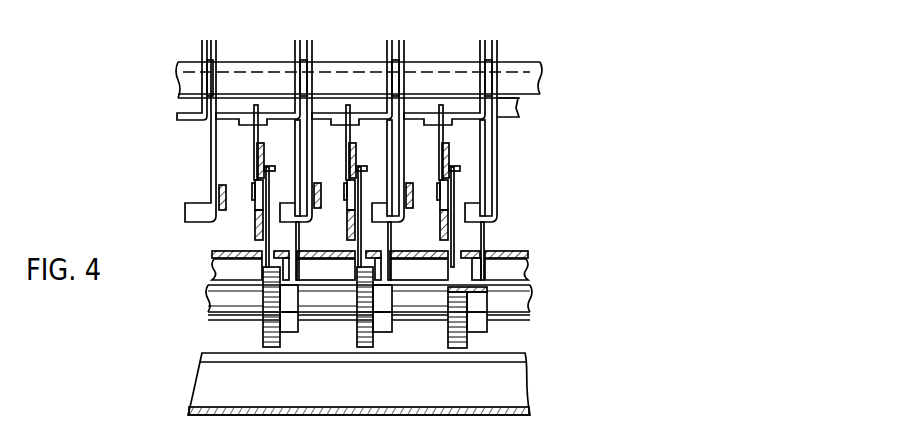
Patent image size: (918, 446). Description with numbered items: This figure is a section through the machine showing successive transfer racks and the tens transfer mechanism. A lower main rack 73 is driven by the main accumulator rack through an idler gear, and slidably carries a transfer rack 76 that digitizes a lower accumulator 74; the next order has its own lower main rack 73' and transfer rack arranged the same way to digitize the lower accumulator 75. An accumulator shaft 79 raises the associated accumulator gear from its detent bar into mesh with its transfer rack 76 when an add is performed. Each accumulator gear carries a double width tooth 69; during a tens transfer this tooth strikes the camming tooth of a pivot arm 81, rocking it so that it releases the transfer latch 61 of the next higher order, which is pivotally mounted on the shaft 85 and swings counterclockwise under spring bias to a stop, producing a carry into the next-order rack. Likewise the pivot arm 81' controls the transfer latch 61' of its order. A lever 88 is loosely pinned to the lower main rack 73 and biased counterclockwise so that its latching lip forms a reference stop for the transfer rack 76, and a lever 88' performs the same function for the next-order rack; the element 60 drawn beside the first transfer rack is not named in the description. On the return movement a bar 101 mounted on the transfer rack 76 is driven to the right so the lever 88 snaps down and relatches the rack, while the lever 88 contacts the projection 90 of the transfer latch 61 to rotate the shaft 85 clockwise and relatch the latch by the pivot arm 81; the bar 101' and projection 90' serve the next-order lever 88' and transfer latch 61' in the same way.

The shaft 85 is at (503, 76).
The lever 88 is at (258, 96).
The lever 88' is at (352, 111).
The projection 90 is at (269, 142).
The projection 90' is at (364, 142).
The lower main rack 73 is at (271, 160).
The lower main rack 73' is at (366, 160).
The pin assembly 60 is at (253, 174).
The transfer rack 76 is at (269, 192).
The transfer latch 61 is at (311, 168).
The transfer latch 61' is at (406, 168).
The bar 101 is at (328, 203).
The bar 101' is at (423, 203).
The pivot arm 81 is at (312, 251).
The pivot arm 81' is at (400, 251).
The accumulator shaft 79 is at (215, 302).
The lower accumulator 74 is at (262, 337).
The lower accumulator 75 is at (357, 337).
The double width tooth 69 is at (485, 309).